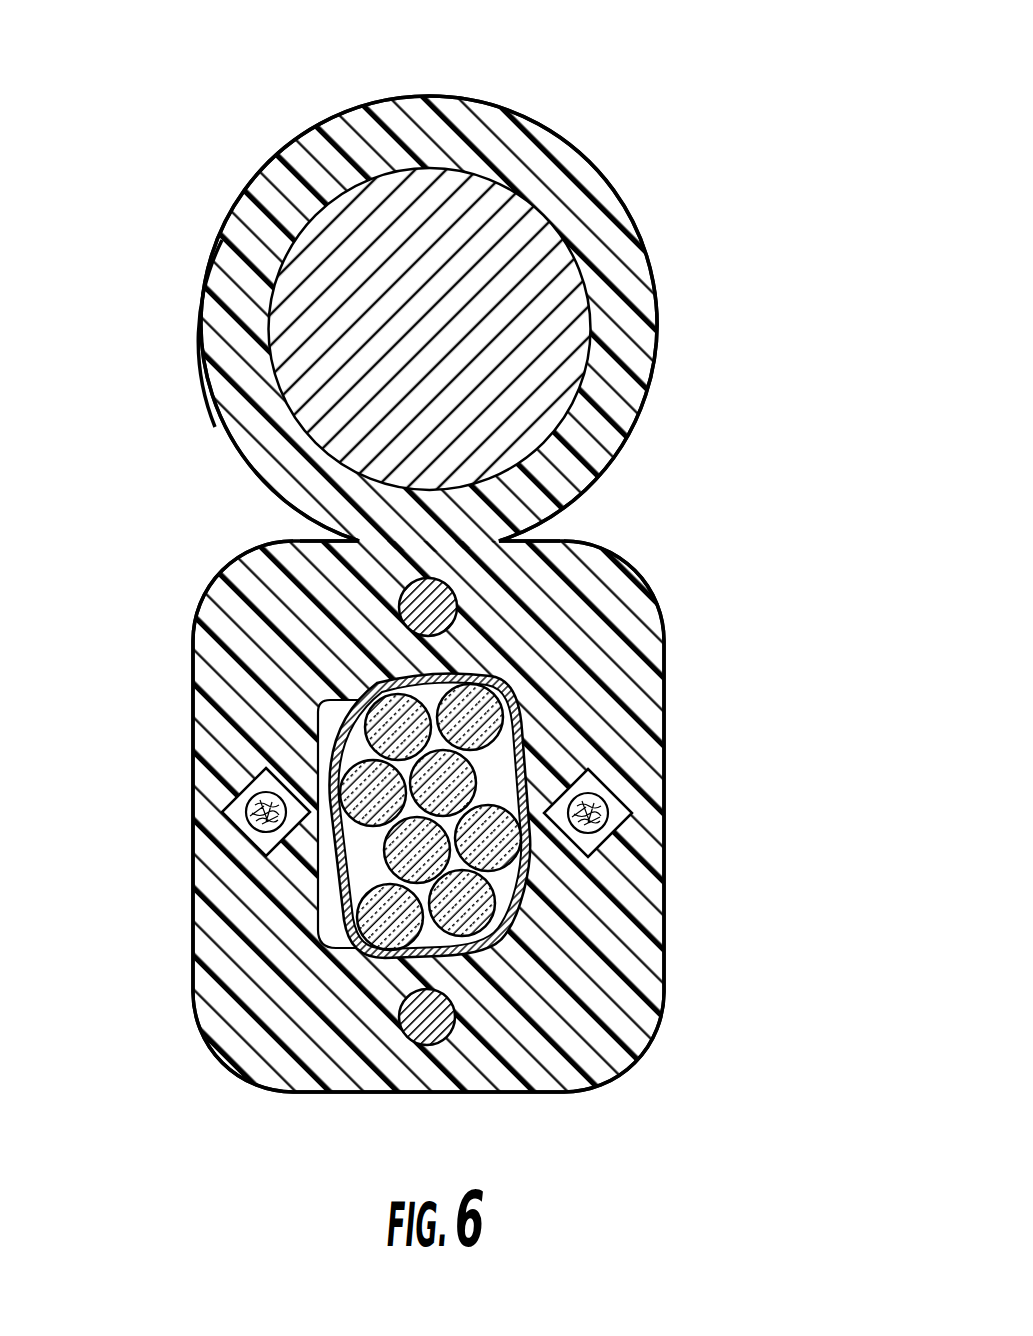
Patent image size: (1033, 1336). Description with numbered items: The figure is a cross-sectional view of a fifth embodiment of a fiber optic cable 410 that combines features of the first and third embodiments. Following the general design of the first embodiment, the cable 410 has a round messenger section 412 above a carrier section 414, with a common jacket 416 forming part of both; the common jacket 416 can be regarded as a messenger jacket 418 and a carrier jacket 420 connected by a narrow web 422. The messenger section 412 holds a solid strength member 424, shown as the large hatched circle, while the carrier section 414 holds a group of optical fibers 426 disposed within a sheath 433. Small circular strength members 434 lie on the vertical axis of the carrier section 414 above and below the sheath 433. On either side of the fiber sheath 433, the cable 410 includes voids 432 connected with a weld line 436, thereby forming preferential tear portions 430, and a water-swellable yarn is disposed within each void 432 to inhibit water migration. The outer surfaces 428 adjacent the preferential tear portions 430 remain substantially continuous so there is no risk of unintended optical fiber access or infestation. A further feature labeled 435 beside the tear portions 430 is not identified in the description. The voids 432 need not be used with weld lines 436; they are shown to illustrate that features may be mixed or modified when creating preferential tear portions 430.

The fiber optic cable 410 is at (715, 230).
The messenger section 412 is at (618, 153).
The carrier section 414 is at (703, 640).
The messenger jacket 416 is at (275, 550).
The messenger section outer surface 418 is at (213, 390).
The carrier section outer surface 420 is at (223, 570).
The web 422 is at (503, 540).
The messenger strength member 424 is at (530, 352).
The optical fibers 426 is at (337, 843).
The surfaces 428 is at (665, 942).
The preferential tear portions 430 is at (222, 812).
The voids 432 is at (222, 797).
The sheath 433 is at (515, 706).
The ripcord 434 is at (433, 608).
The cavity wall 435 is at (590, 840).
The weld line 436 is at (246, 812).